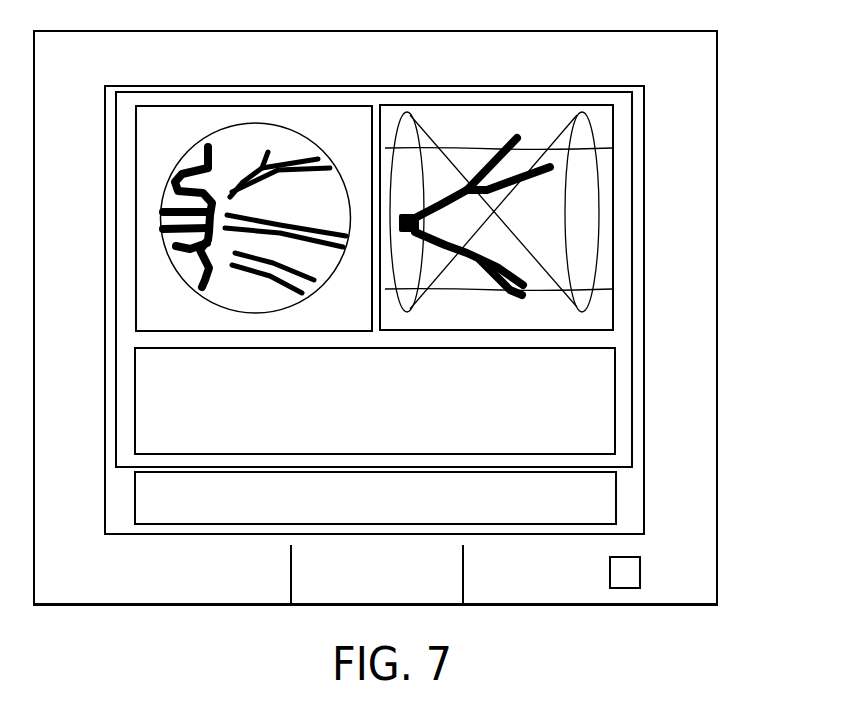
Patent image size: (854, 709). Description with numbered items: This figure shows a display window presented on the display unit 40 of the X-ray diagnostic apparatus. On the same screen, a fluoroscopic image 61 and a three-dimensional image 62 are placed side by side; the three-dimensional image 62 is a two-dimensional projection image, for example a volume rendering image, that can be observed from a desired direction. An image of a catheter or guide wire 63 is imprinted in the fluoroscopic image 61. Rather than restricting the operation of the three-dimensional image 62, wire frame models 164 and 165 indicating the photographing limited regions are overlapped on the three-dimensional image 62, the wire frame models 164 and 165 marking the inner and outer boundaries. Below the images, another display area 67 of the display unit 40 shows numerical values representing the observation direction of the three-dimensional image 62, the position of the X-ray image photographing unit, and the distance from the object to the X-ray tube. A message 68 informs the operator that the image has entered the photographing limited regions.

The display unit 40 is at (717, 202).
The fluoroscopic image 61 is at (342, 105).
The 3D image 62 is at (535, 104).
The catheter (guide wire) 63 is at (217, 180).
The display area 67 is at (617, 393).
The message 68 is at (616, 503).
The wire frame model 164 is at (590, 157).
The wire frame model 165 is at (600, 138).